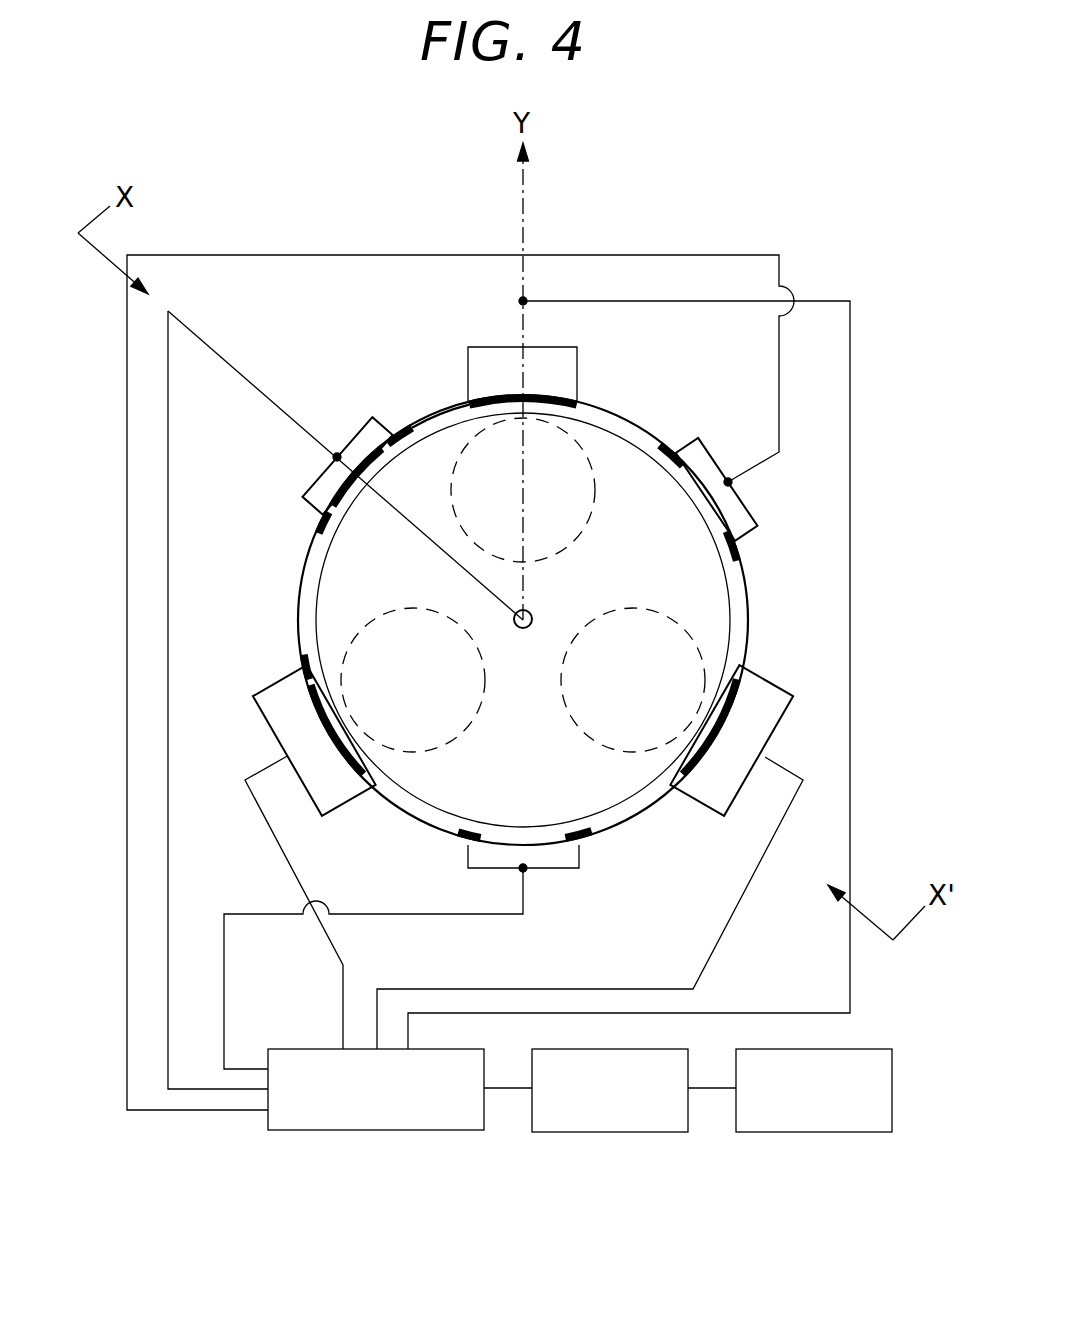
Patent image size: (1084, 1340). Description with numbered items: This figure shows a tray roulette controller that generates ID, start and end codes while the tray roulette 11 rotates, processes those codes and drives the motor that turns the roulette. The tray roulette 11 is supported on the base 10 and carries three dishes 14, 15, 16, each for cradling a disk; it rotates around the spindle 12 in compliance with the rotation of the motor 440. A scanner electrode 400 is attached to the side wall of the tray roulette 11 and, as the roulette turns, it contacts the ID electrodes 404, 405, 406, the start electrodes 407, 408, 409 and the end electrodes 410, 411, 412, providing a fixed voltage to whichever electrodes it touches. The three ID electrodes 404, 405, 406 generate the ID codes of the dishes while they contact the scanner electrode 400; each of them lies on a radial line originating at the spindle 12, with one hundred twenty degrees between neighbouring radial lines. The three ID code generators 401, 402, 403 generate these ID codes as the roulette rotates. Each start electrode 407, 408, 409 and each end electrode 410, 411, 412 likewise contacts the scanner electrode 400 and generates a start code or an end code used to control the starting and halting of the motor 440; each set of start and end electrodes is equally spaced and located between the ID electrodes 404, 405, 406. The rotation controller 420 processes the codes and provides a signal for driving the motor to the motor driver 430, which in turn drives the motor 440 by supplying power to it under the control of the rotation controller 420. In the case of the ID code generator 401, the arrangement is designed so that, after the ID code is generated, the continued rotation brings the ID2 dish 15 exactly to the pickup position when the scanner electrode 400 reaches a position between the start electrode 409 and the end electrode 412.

The base 10 is at (745, 578).
The tray roulette 11 is at (728, 650).
The spindle 12 is at (530, 613).
The dish 14 is at (585, 460).
The dish 15 is at (488, 668).
The dish 16 is at (683, 632).
The scanner electrode 400 is at (358, 498).
The ID code generator 401 is at (578, 373).
The ID code generator 402 is at (337, 792).
The ID code generator 403 is at (767, 688).
The ID electrode 404 is at (443, 410).
The ID electrode 405 is at (307, 660).
The ID electrode 406 is at (698, 763).
The start electrode 407 is at (402, 430).
The start electrode 408 is at (463, 838).
The start electrode 409 is at (735, 548).
The end electrode 410 is at (323, 515).
The end electrode 411 is at (582, 837).
The end electrode 412 is at (645, 432).
The rotation controller 420 is at (426, 1132).
The motor driver 430 is at (635, 1132).
The motor 440 is at (840, 1132).